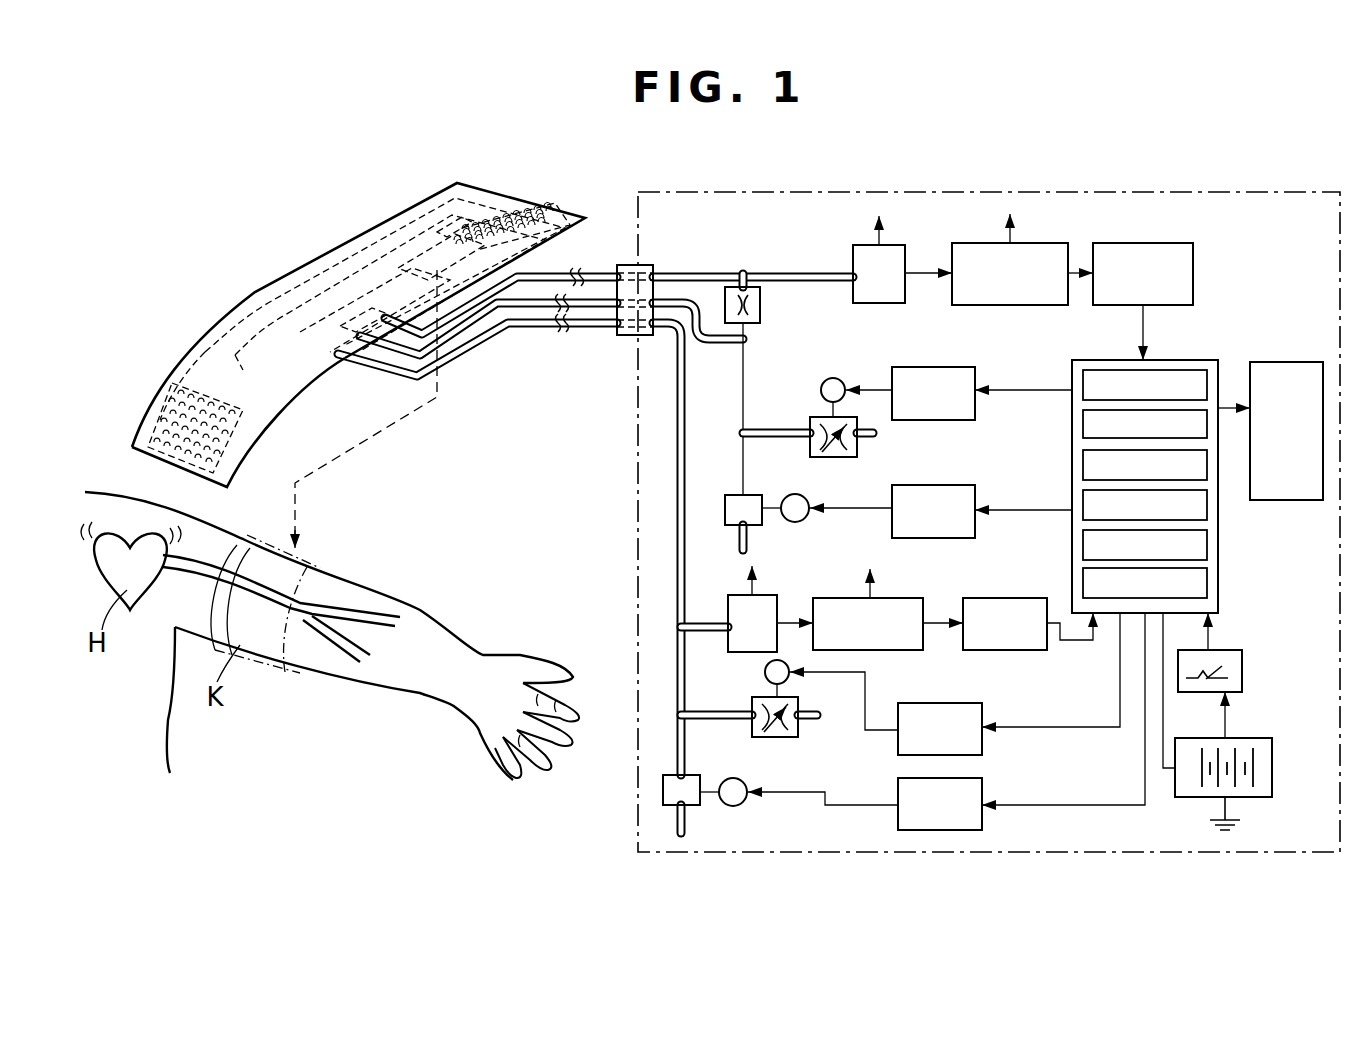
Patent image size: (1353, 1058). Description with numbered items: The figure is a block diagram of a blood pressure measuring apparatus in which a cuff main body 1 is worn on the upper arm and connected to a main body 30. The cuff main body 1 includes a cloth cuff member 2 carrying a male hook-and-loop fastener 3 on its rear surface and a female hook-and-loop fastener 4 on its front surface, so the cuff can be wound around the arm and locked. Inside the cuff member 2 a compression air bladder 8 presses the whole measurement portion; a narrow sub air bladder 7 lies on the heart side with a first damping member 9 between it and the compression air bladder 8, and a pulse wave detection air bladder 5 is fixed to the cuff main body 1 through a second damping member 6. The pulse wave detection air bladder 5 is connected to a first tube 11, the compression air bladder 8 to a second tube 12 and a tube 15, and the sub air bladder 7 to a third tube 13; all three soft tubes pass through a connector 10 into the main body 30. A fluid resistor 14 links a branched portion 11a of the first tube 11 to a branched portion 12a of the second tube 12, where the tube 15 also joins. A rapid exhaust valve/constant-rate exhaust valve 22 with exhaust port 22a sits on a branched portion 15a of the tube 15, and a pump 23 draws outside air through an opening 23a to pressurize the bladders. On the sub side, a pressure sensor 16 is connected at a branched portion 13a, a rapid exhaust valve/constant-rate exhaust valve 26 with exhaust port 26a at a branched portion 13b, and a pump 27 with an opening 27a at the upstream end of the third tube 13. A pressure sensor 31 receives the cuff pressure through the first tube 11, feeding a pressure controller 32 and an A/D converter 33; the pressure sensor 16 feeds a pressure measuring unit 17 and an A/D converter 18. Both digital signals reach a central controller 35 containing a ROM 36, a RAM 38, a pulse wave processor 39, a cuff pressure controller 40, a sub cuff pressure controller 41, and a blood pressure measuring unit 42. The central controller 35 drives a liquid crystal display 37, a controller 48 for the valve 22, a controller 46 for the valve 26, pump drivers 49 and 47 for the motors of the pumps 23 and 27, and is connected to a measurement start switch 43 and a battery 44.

The cuff main body 1 is at (246, 266).
The cuff member 2 is at (212, 345).
The male hook-and-loop fastener 3 is at (145, 410).
The female hook-and-loop fastener 4 is at (516, 212).
The pulse wave detection air bladder 5 is at (482, 196).
The second damping member 6 is at (432, 190).
The sub air bladder 7 is at (290, 275).
The compression air bladder 8 is at (388, 228).
The first damping member 9 is at (338, 243).
The connector 10 is at (628, 338).
The first tube 11 is at (562, 268).
The branched portion 11a is at (745, 275).
The second tube 12 is at (548, 315).
The branched portion 12a is at (748, 338).
The third tube 13 is at (472, 353).
The branched portion 13a is at (690, 620).
The branched portion 13b is at (690, 714).
The fluid resistor 14 is at (727, 300).
The tube 15 is at (748, 378).
The branched portion 15a is at (740, 432).
The pressure sensor 16 is at (770, 595).
The pressure measuring unit 17 is at (900, 598).
The A/D converter 18 is at (1010, 598).
The rapid exhaust valve/constant-rate exhaust valve 22 is at (820, 455).
The exhaust port 22a is at (868, 438).
The pump 23 is at (730, 495).
The opening 23a is at (750, 541).
The rapid exhaust valve/constant-rate exhaust valve 26 is at (780, 740).
The exhaust port 26a is at (810, 718).
The pump 27 is at (661, 792).
The opening 27a is at (692, 826).
The main body 30 is at (880, 190).
The pressure sensor 31 is at (900, 245).
The pressure controller 32 is at (985, 243).
The A/D converter 33 is at (1195, 270).
The central controller 35 is at (1180, 360).
The ROM 36 is at (1207, 375).
The liquid crystal display 37 is at (1290, 362).
The RAM 38 is at (1083, 428).
The pulse wave processor 39 is at (1083, 470).
The cuff pressure controller 40 is at (1207, 508).
The sub cuff pressure controller 41 is at (1207, 548).
The blood pressure measuring unit 42 is at (1207, 583).
The measurement start switch 43 is at (1242, 675).
The battery 44 is at (1272, 755).
The controller 46 is at (982, 708).
The pump driver 47 is at (982, 783).
The controller 48 is at (935, 367).
The pump driver 49 is at (960, 538).